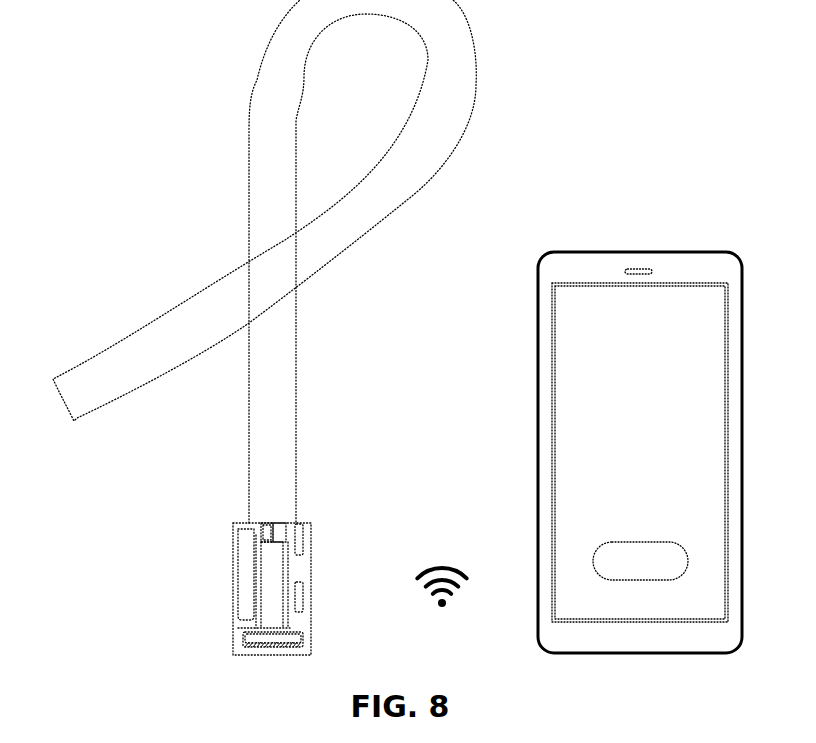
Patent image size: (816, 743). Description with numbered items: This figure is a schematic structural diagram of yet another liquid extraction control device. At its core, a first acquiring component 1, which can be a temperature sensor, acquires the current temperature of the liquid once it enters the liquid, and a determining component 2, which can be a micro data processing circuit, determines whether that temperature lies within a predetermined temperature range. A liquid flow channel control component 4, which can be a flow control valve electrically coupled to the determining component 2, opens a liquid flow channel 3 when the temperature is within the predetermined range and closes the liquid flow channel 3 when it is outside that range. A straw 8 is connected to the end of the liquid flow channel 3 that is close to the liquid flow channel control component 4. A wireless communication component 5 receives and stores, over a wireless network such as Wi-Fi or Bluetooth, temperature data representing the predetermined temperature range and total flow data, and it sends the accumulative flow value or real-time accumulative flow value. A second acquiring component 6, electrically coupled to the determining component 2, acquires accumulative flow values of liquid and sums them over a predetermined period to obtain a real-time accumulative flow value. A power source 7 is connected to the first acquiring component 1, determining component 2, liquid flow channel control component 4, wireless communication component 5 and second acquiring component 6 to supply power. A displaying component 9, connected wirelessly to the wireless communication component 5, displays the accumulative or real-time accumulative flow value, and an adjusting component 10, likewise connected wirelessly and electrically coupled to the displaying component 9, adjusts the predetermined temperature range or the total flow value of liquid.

The first acquiring component 1 is at (309, 639).
The determining component 2 is at (309, 536).
The liquid flow channel 3 is at (280, 575).
The liquid flow channel control component 4 is at (284, 525).
The wireless communication component 5 is at (310, 594).
The second acquiring component 6 is at (296, 557).
The power source 7 is at (233, 555).
The straw 8 is at (300, 353).
The displaying component 9 is at (623, 452).
The adjusting component 10 is at (586, 558).